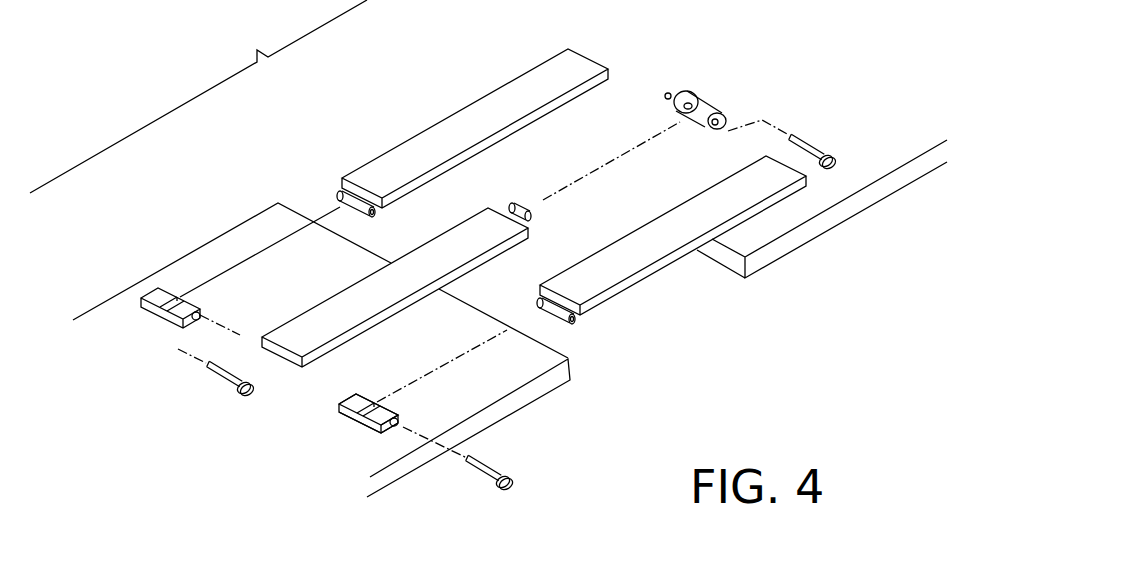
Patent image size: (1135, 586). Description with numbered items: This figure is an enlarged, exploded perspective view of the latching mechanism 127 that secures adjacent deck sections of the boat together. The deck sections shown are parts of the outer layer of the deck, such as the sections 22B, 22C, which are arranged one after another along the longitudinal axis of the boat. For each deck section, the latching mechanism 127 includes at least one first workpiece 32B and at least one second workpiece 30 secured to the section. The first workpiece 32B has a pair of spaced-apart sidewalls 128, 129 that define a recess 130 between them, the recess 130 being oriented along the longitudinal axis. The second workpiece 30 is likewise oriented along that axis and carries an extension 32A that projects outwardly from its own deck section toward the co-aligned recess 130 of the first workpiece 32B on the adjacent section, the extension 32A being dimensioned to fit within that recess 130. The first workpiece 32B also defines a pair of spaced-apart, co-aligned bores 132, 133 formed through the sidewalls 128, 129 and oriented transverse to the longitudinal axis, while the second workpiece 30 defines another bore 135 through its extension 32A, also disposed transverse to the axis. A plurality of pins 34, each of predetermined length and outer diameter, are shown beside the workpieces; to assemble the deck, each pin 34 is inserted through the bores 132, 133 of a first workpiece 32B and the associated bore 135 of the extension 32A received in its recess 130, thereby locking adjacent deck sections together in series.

The latching mechanism 127 is at (299, 179).
The second workpiece 30 is at (422, 131).
The extension 32A is at (343, 200).
The first workpiece 32B is at (149, 291).
The bore 132 is at (200, 312).
The bore 133 is at (149, 282).
The pin 34 is at (812, 143).
The bore 135 is at (360, 213).
The outer layer of the deck 22B is at (817, 228).
The outer layer of the deck 22C is at (535, 393).
The recess 130 is at (372, 390).
The sidewall 128 is at (340, 395).
The sidewall 129 is at (383, 432).